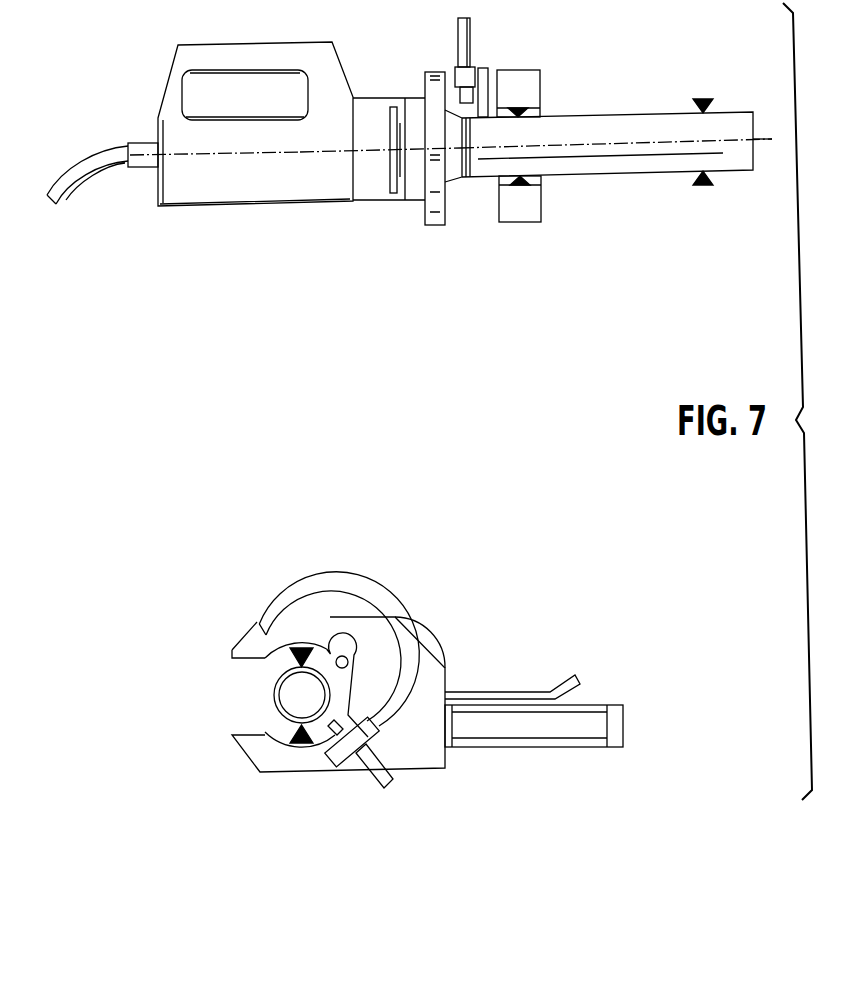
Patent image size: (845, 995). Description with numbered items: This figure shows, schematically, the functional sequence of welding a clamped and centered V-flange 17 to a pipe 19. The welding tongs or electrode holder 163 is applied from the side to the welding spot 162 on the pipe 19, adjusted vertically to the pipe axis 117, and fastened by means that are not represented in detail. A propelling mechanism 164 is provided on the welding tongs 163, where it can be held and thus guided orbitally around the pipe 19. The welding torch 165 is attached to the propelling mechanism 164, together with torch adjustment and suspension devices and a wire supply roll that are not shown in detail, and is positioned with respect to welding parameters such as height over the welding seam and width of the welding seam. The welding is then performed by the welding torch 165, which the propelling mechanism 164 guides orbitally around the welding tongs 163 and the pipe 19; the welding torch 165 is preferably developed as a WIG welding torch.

The V-flange 17 is at (432, 72).
The pipe 19 is at (754, 123).
The pipe axis 117 is at (764, 141).
The welding spot 162 is at (468, 178).
The welding tongs 163 is at (527, 80).
The propelling mechanism 164 is at (482, 77).
The welding torch 165 is at (463, 99).